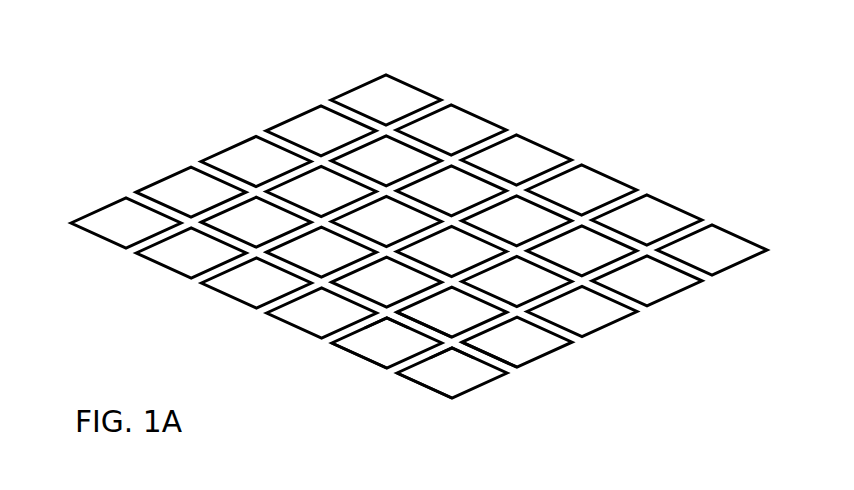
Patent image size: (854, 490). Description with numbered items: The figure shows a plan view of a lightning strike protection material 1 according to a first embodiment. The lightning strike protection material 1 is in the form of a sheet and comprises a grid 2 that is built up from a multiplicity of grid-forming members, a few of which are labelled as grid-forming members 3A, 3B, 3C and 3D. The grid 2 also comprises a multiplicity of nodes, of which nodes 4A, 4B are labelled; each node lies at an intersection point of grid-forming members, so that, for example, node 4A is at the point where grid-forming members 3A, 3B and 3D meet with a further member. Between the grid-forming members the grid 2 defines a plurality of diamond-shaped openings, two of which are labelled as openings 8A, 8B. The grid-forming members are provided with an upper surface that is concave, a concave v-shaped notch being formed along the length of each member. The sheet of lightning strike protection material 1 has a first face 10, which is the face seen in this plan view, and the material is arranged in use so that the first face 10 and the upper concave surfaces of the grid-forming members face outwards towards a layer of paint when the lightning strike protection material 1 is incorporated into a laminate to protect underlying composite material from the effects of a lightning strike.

The lightning strike protection material 1 is at (148, 123).
The grid 2 is at (300, 113).
The first face 10 is at (455, 128).
The grid-forming member 3A is at (507, 367).
The grid-forming member 3B is at (392, 372).
The grid-forming member 3C is at (327, 340).
The grid-forming member 3D is at (418, 323).
The node 4A is at (453, 340).
The node 4B is at (387, 311).
The opening 8A is at (513, 340).
The opening 8B is at (445, 378).